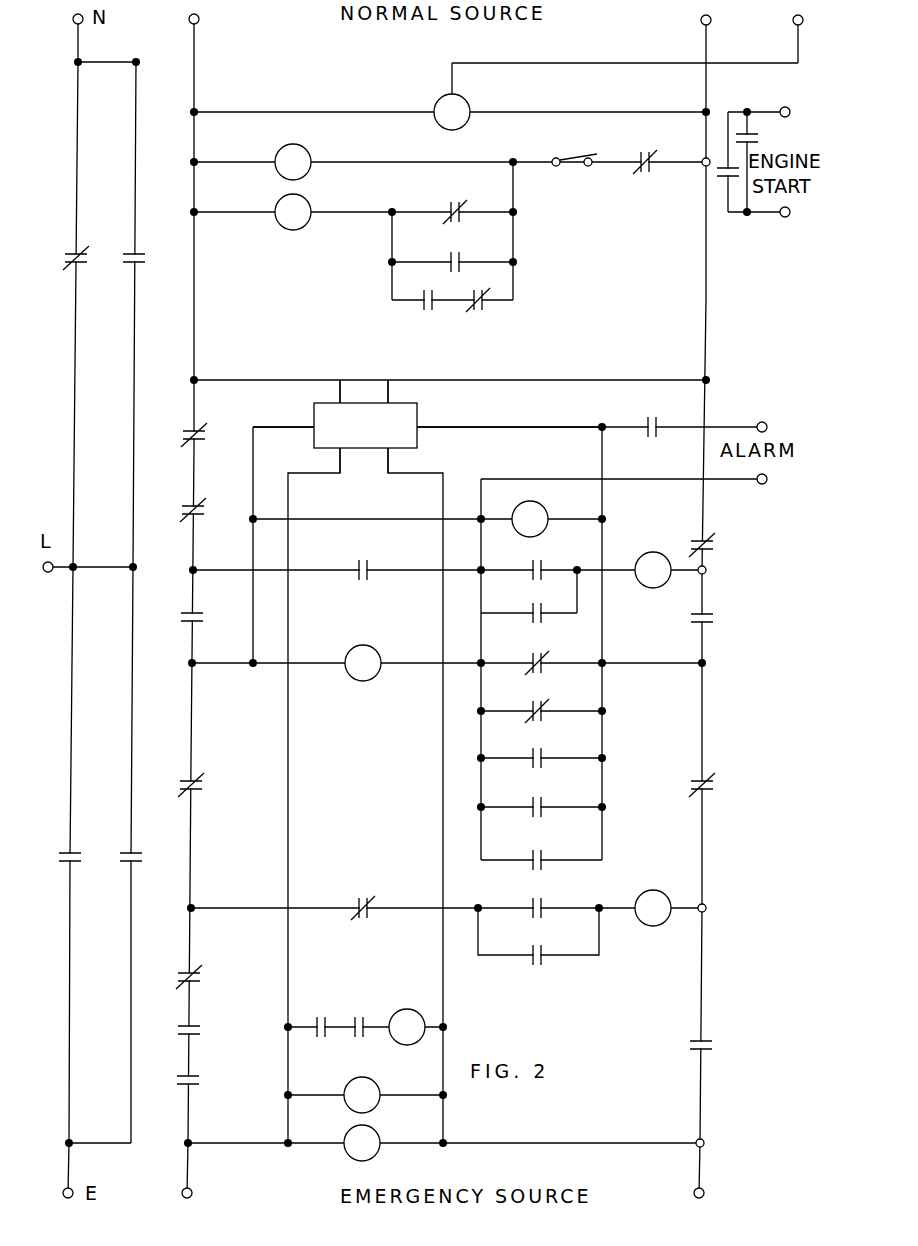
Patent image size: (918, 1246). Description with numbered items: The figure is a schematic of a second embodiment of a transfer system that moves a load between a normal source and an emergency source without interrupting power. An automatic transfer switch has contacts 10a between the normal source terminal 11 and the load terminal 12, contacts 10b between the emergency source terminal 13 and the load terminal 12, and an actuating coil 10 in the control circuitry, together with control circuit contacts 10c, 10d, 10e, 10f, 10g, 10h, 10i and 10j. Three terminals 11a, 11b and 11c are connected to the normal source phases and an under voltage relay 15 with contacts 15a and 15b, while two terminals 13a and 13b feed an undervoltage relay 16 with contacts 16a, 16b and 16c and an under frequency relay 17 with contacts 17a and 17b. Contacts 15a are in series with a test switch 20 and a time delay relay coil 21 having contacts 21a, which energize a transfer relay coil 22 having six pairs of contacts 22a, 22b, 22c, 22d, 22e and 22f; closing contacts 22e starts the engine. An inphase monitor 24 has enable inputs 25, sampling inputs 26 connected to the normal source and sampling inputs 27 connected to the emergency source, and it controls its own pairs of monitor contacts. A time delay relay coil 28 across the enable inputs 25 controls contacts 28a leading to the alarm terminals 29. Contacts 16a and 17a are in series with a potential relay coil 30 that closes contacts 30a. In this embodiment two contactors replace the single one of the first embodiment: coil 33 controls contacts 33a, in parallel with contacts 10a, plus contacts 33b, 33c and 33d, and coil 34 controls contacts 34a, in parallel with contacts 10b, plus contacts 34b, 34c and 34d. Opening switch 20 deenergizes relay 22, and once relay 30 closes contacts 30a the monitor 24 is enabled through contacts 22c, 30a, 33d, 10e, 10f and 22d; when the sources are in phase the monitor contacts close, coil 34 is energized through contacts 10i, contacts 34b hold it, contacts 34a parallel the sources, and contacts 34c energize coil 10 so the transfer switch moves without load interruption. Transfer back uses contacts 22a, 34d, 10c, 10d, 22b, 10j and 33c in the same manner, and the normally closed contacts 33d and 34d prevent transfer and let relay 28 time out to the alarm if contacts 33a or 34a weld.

The actuating coil 10 is at (373, 647).
The transfer switch contacts 10a is at (82, 252).
The transfer switch contacts 10b is at (83, 865).
The control circuit contacts 10c is at (203, 612).
The control circuit contacts 10d is at (714, 625).
The control circuit contacts 10e is at (203, 792).
The control circuit contacts 10f is at (714, 786).
The control circuit contacts 10g is at (421, 306).
The control circuit contacts 10h is at (754, 135).
The control circuit contacts 10i is at (358, 902).
The control circuit contacts 10j is at (356, 562).
The normal source terminal 11 is at (84, 22).
The normal source terminal 11a is at (199, 22).
The normal source terminal 11b is at (700, 24).
The normal source terminal 11c is at (793, 24).
The load terminal 12 is at (52, 570).
The emergency source terminal 13 is at (72, 1188).
The emergency source terminal 13a is at (191, 1188).
The emergency source terminal 13b is at (703, 1188).
The under voltage relay 15 is at (445, 97).
The contacts 15a is at (641, 153).
The contacts 15b is at (537, 752).
The undervoltage relay 16 is at (373, 1082).
The contacts 16a is at (390, 988).
The contacts 16b is at (537, 703).
The contacts 16c is at (486, 306).
The under frequency relay 17 is at (375, 1128).
The contacts 17a is at (338, 988).
The contacts 17b is at (537, 653).
The test switch 20 is at (562, 156).
The time delay relay coil 21 is at (308, 150).
The contacts 21a is at (450, 255).
The transfer relay coil 22 is at (296, 231).
The contacts 22a is at (187, 432).
The contacts 22b is at (710, 545).
The contacts 22c is at (203, 1083).
The contacts 22d is at (713, 1043).
The contacts 22e is at (723, 178).
The contacts 22f is at (449, 204).
The inphase monitor 24 is at (420, 410).
The enable inputs 25 is at (314, 430).
The sampling inputs 26 is at (388, 402).
The sampling inputs 27 is at (343, 450).
The time delay relay coil 28 is at (540, 503).
The contacts 28a is at (647, 418).
The alarm terminals 29 is at (764, 422).
The potential relay coil 30 is at (425, 1008).
The contacts 30a is at (203, 1038).
The contactor coil 33 is at (667, 525).
The contactor contacts 33a is at (140, 252).
The contacts 33b is at (533, 562).
The contacts 33c is at (540, 803).
The contacts 33d is at (203, 988).
The contactor coil 34 is at (667, 890).
The contactor contacts 34a is at (144, 865).
The contacts 34b is at (542, 958).
The contacts 34c is at (540, 850).
The contacts 34d is at (183, 517).